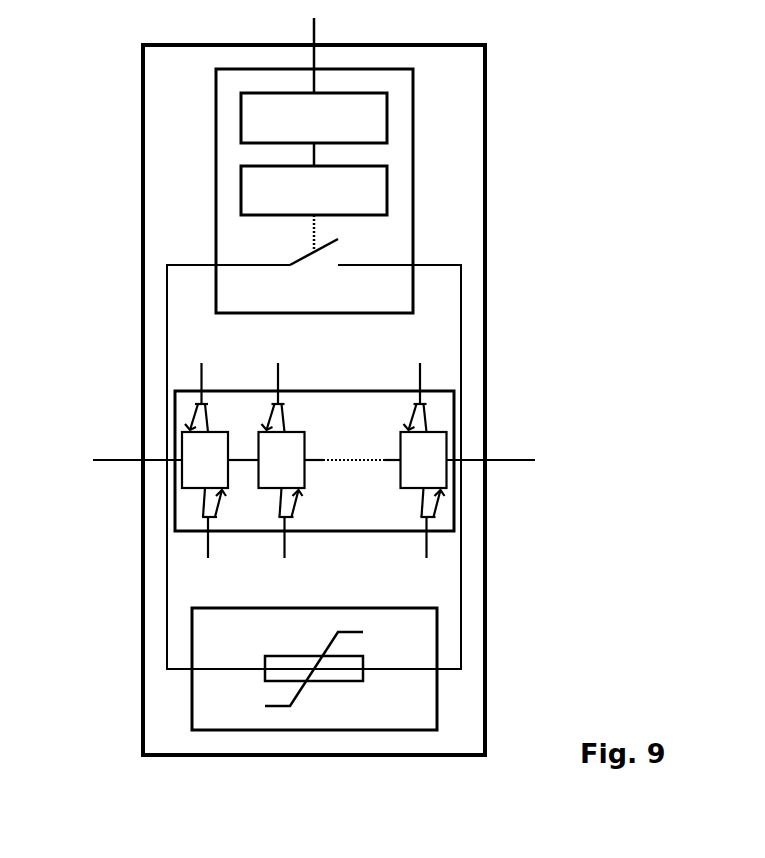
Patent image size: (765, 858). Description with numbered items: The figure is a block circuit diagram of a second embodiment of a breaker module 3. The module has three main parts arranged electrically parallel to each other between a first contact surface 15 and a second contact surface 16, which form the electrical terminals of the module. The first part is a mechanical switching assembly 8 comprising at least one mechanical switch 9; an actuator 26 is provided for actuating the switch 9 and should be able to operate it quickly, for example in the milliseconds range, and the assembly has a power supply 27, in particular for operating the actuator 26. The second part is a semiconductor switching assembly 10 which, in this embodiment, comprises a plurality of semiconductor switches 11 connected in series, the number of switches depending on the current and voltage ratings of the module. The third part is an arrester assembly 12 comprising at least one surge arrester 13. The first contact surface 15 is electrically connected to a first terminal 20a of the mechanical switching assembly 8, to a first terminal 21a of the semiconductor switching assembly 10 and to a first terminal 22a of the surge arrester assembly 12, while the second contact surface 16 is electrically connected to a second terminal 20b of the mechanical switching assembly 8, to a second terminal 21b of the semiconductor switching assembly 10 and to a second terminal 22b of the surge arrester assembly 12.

The breaker module 3 is at (344, 400).
The mechanical switching assembly 8 is at (252, 165).
The mechanical switch 9 is at (217, 199).
The semiconductor switching assembly 10 is at (257, 433).
The semiconductor switch 11 is at (306, 424).
The arrester assembly 12 is at (252, 651).
The surge arrester 13 is at (220, 610).
The first contact surface 15 is at (85, 478).
The second contact surface 16 is at (535, 476).
The first terminal of the mechanical switching assembly 20a is at (181, 331).
The second terminal of the mechanical switching assembly 20b is at (454, 330).
The first terminal of the semiconductor switching assembly 21a is at (111, 432).
The second terminal of the semiconductor switching assembly 21b is at (511, 432).
The first terminal of the surge arrester assembly 22a is at (196, 581).
The second terminal of the surge arrester assembly 22b is at (433, 586).
The actuator 26 is at (393, 175).
The power supply 27 is at (393, 93).